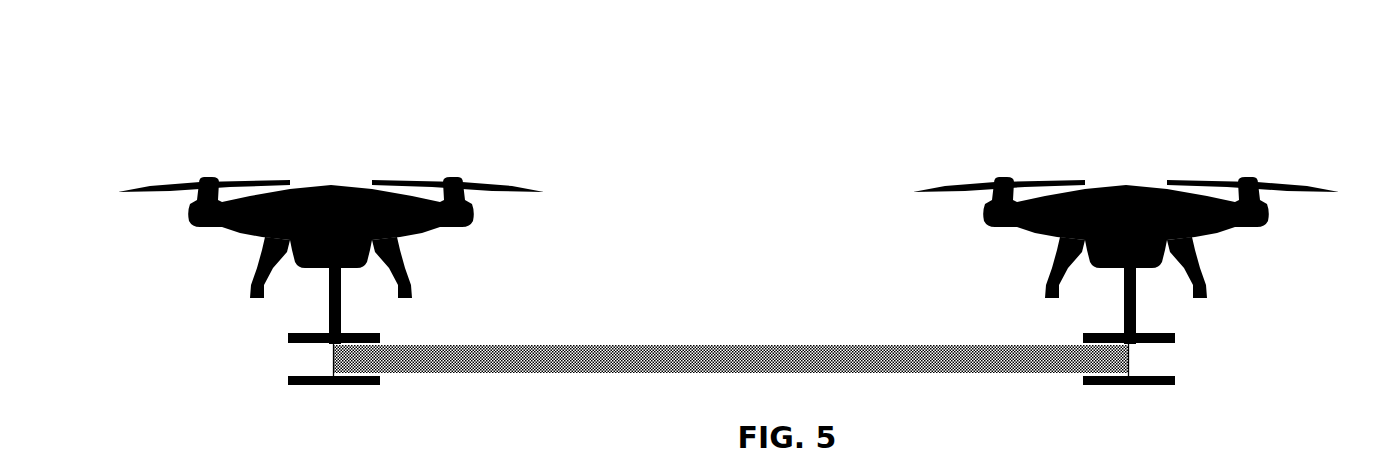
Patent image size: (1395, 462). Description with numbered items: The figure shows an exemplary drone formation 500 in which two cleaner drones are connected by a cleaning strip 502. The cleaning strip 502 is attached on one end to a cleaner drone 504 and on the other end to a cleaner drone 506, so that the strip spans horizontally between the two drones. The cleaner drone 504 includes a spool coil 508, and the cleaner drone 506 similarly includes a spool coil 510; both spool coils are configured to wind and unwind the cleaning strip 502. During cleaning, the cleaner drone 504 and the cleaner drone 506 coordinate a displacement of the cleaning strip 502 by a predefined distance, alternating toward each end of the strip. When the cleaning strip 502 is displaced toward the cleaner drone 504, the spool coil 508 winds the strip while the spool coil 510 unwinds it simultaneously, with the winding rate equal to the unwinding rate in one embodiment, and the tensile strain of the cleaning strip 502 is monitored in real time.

The drone formation 500 is at (1252, 90).
The cleaning strip 502 is at (730, 359).
The cleaner drone 504 is at (350, 185).
The cleaner drone 506 is at (1133, 185).
The spool coil 508 is at (288, 375).
The spool coil 510 is at (1173, 378).